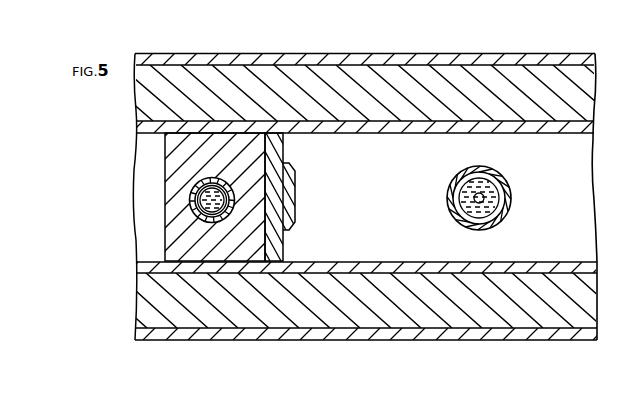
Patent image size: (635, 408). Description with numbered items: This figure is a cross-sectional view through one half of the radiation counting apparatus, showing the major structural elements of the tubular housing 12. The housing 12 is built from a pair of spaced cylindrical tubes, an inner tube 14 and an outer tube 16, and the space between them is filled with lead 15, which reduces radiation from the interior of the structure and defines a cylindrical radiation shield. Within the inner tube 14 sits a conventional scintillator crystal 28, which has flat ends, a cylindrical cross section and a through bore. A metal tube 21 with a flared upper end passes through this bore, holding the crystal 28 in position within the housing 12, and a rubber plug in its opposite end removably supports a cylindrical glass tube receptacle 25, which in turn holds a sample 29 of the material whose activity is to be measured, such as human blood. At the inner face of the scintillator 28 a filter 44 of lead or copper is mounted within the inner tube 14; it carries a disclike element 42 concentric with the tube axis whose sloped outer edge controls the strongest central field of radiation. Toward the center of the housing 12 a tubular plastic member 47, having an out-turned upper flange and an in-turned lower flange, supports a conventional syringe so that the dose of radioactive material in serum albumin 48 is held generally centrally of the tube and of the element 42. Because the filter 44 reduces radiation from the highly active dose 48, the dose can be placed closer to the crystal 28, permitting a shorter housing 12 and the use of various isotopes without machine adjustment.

The tubular housing 12 is at (312, 54).
The outer tube 16 is at (561, 53).
The lead 15 is at (590, 80).
The inner tube 14 is at (593, 123).
The scintillator crystal 28 is at (243, 238).
The filter 44 is at (277, 152).
The disclike element 42 is at (294, 188).
The metal tube 21 is at (205, 181).
The sample 29 is at (197, 200).
The cylindrical glass tube receptacle 25 is at (204, 220).
The tubular plastic member 47 is at (480, 166).
The dose of radioactive material in serum albumin 48 is at (462, 212).